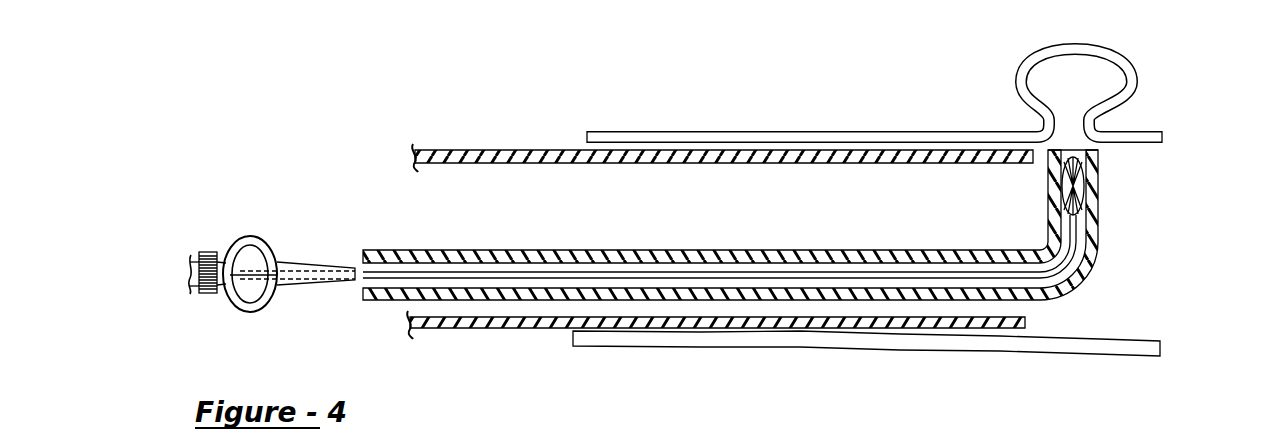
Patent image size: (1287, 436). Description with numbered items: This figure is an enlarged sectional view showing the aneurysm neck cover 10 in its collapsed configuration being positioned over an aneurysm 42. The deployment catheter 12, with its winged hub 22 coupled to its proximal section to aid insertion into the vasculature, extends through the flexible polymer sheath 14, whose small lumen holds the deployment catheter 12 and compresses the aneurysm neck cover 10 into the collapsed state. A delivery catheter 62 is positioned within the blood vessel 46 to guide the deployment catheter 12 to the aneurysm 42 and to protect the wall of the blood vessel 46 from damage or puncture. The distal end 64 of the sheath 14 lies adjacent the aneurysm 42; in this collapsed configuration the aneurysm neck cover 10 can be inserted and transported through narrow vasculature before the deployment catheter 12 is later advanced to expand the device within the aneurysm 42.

The aneurysm neck cover 10 is at (1097, 197).
The deployment catheter 12 is at (838, 278).
The sheath 14 is at (712, 288).
The winged hub 22 is at (250, 237).
The aneurysm 42 is at (1137, 67).
The blood vessel 46 is at (617, 338).
The delivery catheter 62 is at (500, 150).
The distal end of the sheath 64 is at (1097, 173).